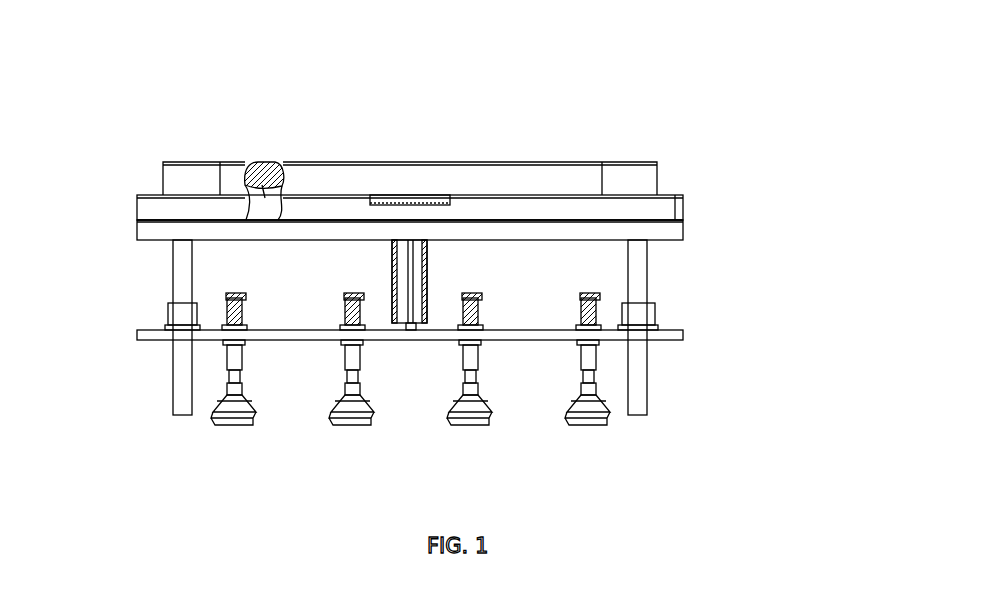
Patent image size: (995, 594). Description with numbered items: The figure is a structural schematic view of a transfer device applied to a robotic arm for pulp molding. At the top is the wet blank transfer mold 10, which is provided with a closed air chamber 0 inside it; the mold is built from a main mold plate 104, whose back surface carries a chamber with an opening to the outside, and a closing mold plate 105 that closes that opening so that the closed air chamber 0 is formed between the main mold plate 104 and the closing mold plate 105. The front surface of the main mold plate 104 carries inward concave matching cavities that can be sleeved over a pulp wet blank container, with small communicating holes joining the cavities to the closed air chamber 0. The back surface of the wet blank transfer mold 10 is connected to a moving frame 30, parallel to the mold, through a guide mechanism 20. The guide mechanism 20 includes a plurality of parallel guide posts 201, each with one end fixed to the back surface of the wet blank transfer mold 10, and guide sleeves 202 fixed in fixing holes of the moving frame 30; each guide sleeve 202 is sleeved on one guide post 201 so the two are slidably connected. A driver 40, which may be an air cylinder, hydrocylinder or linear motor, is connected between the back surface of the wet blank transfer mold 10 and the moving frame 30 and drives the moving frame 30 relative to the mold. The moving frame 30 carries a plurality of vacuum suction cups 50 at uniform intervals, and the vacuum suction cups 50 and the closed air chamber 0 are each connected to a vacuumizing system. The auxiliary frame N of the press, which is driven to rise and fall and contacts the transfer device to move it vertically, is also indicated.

The auxiliary frame N is at (201, 132).
The closed air chamber 0 is at (265, 178).
The wet blank transfer mold 10 is at (690, 172).
The main mold plate 104 is at (530, 182).
The closing mold plate 105 is at (428, 236).
The guide mechanism 20 is at (658, 292).
The guide post 201 is at (185, 277).
The guide sleeve 202 is at (188, 318).
The moving frame 30 is at (303, 339).
The driver 40 is at (417, 280).
The vacuum suction cup 50 is at (468, 407).